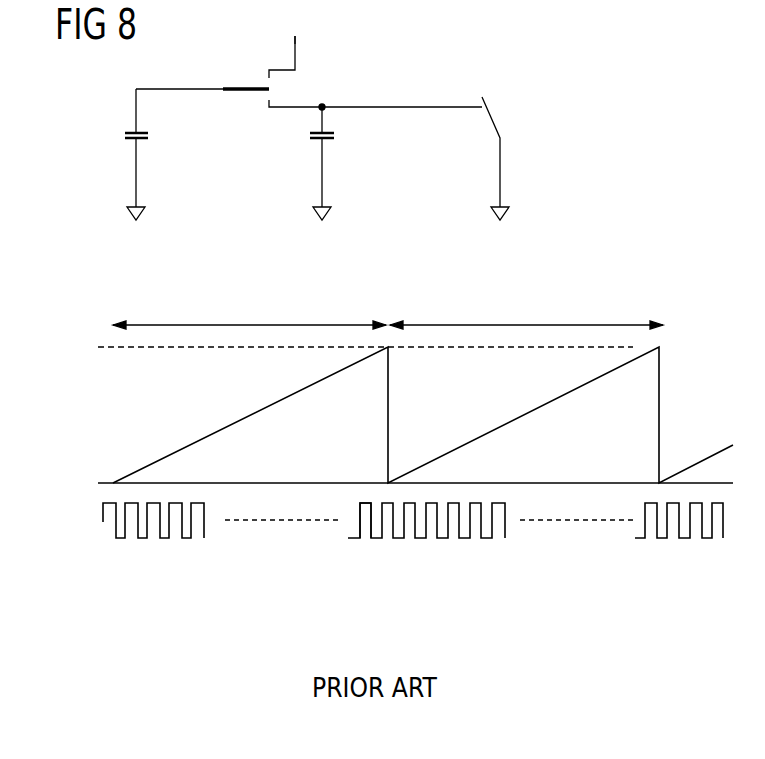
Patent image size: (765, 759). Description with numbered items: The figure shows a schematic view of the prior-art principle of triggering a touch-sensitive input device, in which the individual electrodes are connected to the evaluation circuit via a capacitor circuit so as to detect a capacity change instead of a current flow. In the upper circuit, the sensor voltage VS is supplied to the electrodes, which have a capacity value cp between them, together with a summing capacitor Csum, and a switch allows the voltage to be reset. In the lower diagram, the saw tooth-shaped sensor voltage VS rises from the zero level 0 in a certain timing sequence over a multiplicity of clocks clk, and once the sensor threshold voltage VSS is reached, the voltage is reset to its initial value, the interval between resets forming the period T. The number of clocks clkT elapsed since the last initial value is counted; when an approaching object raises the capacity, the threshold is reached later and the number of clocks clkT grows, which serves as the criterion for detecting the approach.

The sensor voltage VS is at (295, 44).
The capacity value cp is at (143, 141).
The summing capacitor Csum is at (332, 141).
The sensor threshold voltage VSS is at (343, 348).
The period T is at (388, 326).
The zero level 0 is at (407, 486).
The clocks clk is at (103, 522).
The number of clocks clkT is at (372, 540).